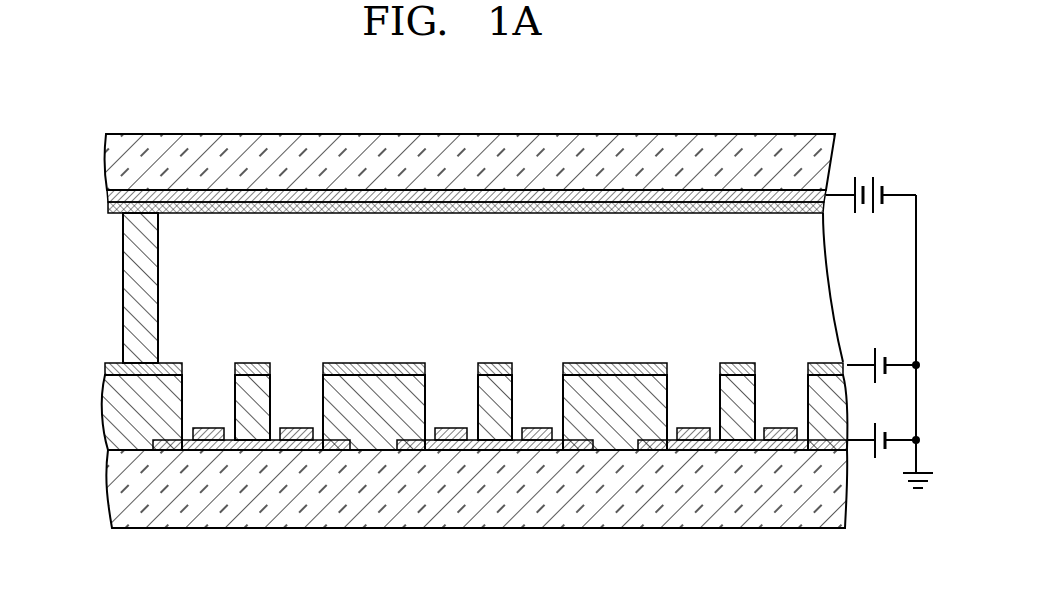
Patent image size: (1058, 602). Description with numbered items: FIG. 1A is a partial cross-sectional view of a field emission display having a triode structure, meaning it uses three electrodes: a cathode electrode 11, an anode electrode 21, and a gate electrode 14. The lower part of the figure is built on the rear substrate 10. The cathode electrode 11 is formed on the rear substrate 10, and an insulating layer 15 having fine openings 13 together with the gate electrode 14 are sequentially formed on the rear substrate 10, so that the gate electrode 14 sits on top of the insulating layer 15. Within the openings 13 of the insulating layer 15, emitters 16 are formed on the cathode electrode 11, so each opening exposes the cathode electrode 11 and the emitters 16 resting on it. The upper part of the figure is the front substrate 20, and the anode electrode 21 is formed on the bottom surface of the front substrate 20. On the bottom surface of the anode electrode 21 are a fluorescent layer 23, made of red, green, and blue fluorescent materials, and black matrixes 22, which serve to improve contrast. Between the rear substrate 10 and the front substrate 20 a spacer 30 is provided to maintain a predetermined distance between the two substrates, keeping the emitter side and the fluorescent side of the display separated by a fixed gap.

The rear substrate 10 is at (128, 490).
The cathode electrode 11 is at (250, 450).
The fine openings 13 is at (208, 383).
The gate electrode 14 is at (106, 370).
The insulating layer 15 is at (128, 415).
The emitters 16 is at (207, 440).
The front substrate 20 is at (112, 160).
The anode electrode 21 is at (110, 195).
The black matrixes 22 is at (108, 208).
The fluorescent layer 23 is at (256, 202).
The spacer 30 is at (122, 283).